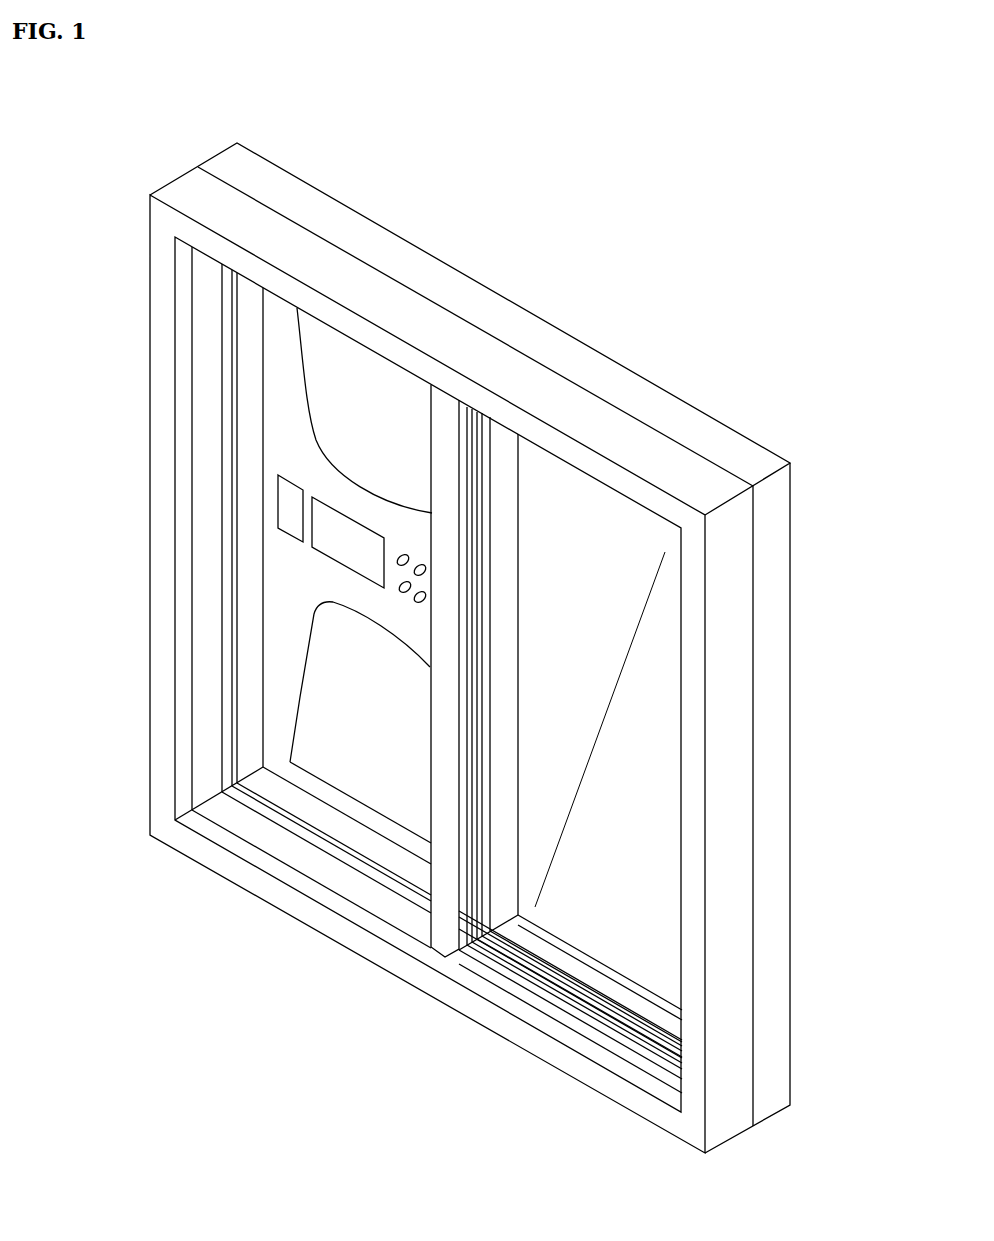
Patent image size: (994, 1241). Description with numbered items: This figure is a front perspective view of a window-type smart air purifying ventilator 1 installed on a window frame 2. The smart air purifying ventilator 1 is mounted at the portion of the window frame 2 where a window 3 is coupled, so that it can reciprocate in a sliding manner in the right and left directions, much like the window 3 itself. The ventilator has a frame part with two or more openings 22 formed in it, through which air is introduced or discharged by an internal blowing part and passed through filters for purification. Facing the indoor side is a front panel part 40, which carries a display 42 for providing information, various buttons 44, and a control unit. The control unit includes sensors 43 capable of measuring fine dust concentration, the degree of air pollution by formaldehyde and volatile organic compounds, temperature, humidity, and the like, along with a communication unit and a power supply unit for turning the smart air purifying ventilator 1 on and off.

The window-type smart air purifying ventilator 1 is at (395, 362).
The window frame 2 is at (772, 184).
The window 3 is at (667, 688).
The openings 22 is at (342, 712).
The front panel part 40 is at (283, 382).
The display 42 is at (305, 504).
The sensors 43 is at (278, 482).
The buttons 44 is at (384, 588).